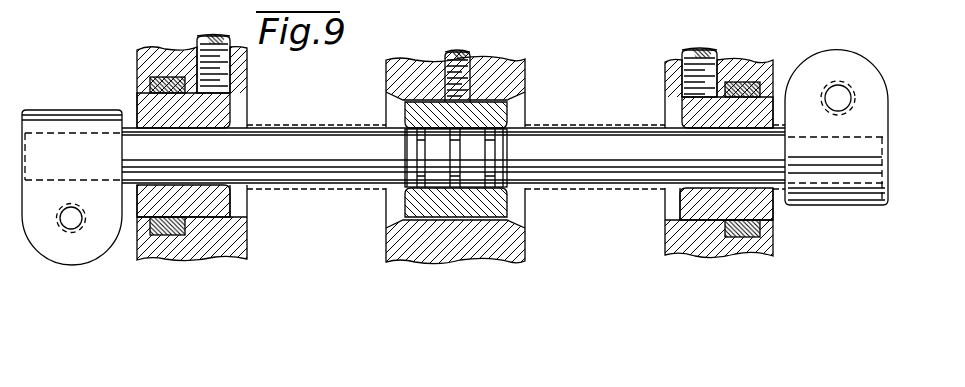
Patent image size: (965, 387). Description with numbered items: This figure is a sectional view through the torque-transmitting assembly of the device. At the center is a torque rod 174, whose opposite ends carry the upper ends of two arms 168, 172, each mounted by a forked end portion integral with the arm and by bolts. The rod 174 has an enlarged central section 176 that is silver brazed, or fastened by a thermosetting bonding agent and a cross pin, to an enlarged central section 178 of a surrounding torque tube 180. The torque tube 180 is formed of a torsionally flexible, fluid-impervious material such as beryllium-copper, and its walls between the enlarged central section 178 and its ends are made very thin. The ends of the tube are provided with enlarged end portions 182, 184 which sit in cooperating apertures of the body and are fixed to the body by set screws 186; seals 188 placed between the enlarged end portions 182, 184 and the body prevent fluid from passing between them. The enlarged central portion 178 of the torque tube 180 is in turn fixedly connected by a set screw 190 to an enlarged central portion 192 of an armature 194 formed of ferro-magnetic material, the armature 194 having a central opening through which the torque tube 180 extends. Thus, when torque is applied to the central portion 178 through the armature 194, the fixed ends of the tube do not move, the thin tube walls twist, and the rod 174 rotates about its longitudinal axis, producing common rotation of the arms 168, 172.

The arm 168 is at (58, 106).
The arm 172 is at (860, 50).
The torque rod 174 is at (605, 143).
The enlarged central section of the torque rod 176 is at (478, 150).
The enlarged central section of the torque tube 178 is at (500, 201).
The torque tube 180 is at (350, 118).
The enlarged end portion 182 is at (137, 107).
The enlarged end portion 184 is at (765, 205).
The set screw 186 is at (207, 37).
The seal 188 is at (165, 234).
The set screw 190 is at (466, 52).
The enlarged central portion of the armature 192 is at (512, 67).
The armature 194 is at (380, 242).